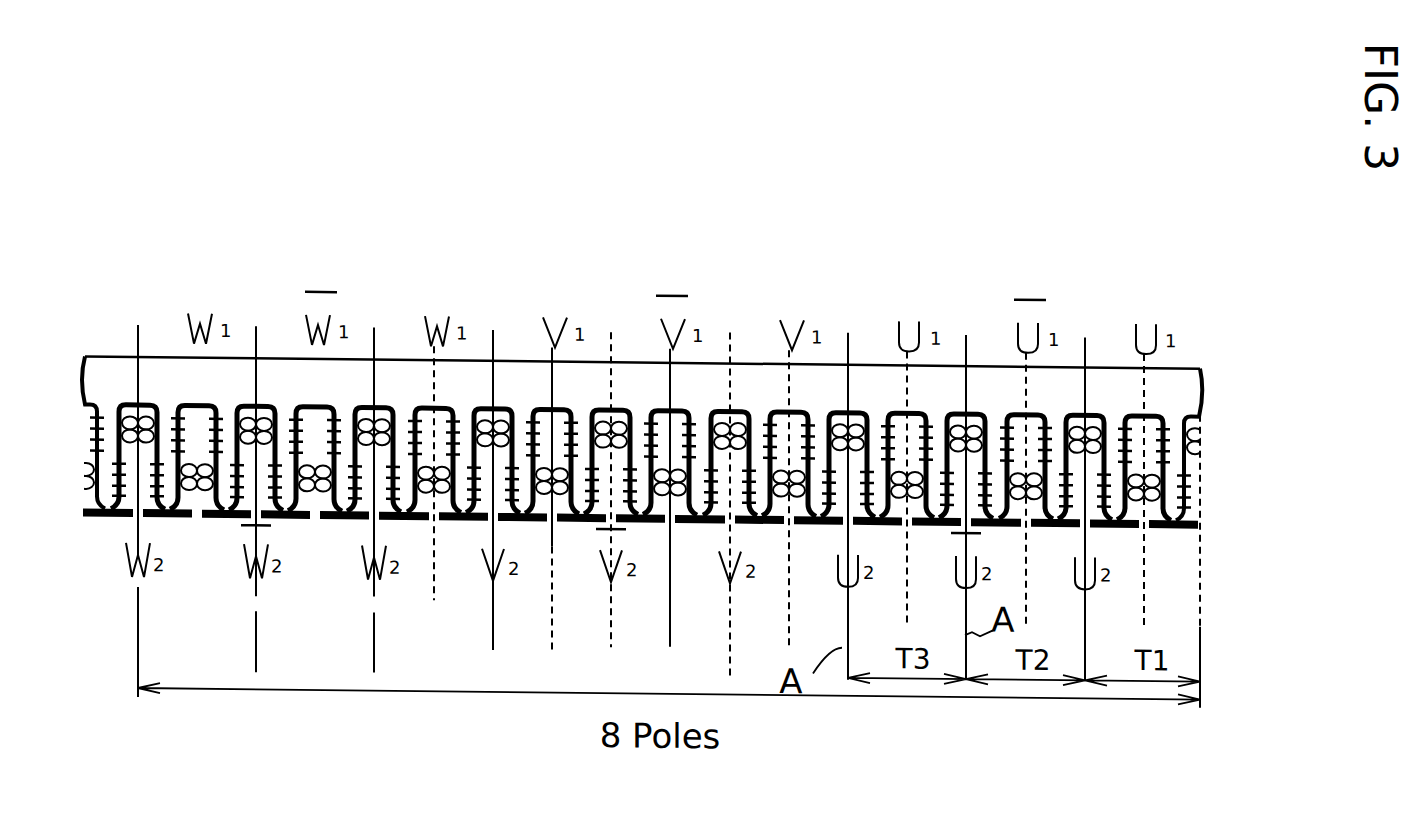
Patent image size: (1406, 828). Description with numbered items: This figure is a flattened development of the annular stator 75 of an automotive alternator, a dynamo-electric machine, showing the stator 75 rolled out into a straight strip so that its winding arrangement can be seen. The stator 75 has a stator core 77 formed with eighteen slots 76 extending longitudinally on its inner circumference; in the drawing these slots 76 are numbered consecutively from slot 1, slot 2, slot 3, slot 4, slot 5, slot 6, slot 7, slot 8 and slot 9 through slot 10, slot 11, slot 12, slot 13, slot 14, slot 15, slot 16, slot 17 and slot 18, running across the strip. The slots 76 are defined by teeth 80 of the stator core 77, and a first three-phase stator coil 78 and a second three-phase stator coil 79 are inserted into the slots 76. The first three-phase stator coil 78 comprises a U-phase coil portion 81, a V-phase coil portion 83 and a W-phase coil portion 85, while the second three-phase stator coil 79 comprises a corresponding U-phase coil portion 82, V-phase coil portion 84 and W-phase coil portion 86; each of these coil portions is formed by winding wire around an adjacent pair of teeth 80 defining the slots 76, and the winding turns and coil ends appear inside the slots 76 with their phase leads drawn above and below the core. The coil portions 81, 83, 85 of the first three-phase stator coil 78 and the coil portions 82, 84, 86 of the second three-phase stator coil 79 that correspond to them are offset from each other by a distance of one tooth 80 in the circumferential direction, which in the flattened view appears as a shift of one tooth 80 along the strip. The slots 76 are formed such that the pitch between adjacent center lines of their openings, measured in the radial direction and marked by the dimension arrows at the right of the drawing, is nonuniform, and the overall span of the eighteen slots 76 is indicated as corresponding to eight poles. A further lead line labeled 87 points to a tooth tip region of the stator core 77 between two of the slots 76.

The stator 75 is at (562, 250).
The slots 76 is at (313, 455).
The stator core 77 is at (870, 380).
The first 3-phase stator coil 78 is at (688, 402).
The second 3-phase stator coil 79 is at (485, 516).
The teeth 80 is at (290, 518).
The U-phase coil portion 81 is at (1033, 418).
The U-phase coil portion 82 is at (1093, 500).
The V-phase coil portion 83 is at (840, 400).
The V-phase coil portion 84 is at (673, 514).
The W-phase coil portion 85 is at (243, 409).
The W-phase coil portion 86 is at (195, 500).
The tooth tip 87 is at (600, 522).
The slot 1 is at (1148, 455).
The slot 2 is at (1088, 455).
The slot 3 is at (1029, 454).
The slot 4 is at (970, 453).
The slot 5 is at (911, 453).
The slot 6 is at (852, 452).
The slot 7 is at (793, 451).
The slot 8 is at (734, 451).
The slot 9 is at (673, 450).
The slot 10 is at (618, 449).
The slot 11 is at (559, 449).
The slot 12 is at (500, 448).
The slot 13 is at (440, 447).
The slot 14 is at (382, 447).
The slot 15 is at (323, 446).
The slot 16 is at (263, 445).
The slot 17 is at (203, 445).
The slot 18 is at (145, 444).